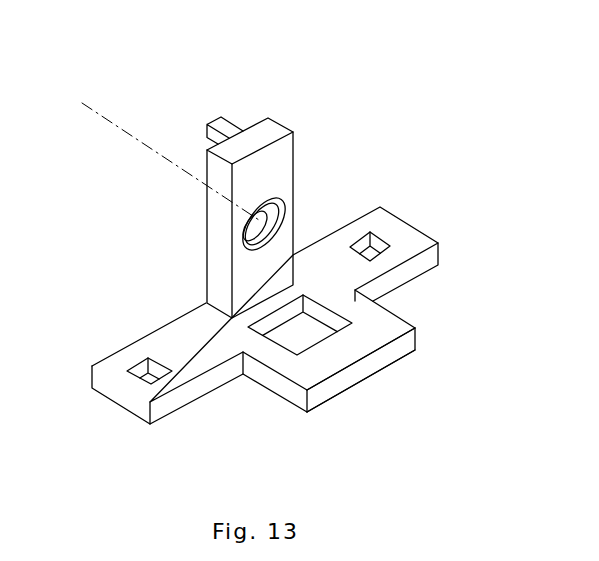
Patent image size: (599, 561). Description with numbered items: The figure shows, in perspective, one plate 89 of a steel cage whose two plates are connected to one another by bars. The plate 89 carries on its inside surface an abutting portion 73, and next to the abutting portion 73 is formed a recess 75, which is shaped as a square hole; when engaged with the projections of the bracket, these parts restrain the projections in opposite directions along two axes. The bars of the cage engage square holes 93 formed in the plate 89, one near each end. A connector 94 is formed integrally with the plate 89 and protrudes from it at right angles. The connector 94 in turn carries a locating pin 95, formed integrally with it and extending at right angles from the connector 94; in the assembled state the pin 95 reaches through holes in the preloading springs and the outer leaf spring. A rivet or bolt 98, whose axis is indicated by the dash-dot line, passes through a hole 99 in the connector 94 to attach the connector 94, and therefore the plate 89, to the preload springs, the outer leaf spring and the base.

The abutting portion 73 is at (372, 322).
The recess 75 is at (322, 298).
The plate 89 is at (357, 360).
The square holes 93 is at (140, 360).
The connector 94 is at (274, 132).
The locating pin 95 is at (237, 118).
The rivet or bolt 98 is at (130, 136).
The hole 99 is at (283, 203).